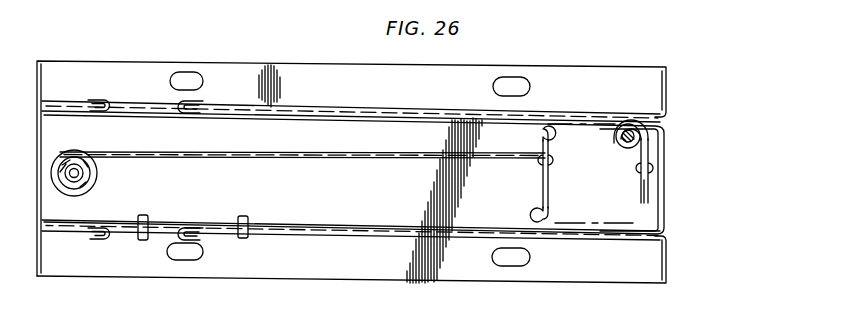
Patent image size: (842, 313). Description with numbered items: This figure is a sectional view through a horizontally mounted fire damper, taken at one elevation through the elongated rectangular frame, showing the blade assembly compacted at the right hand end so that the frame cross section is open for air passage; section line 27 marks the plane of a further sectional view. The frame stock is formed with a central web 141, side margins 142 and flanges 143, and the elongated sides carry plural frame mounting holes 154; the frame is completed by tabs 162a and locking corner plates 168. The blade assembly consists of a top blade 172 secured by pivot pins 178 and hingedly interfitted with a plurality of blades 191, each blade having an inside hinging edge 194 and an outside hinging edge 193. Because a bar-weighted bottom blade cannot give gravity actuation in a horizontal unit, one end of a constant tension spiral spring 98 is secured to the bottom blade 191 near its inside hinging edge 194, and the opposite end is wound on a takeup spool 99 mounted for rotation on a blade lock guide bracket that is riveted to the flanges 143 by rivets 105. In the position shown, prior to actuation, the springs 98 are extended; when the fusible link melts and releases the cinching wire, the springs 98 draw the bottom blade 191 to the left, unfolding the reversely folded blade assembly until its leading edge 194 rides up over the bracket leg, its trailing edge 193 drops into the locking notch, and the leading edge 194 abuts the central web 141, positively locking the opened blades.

The section line 27 is at (77, 67).
The side margins 142 is at (668, 90).
The flanges 143 is at (365, 112).
The frame mounting holes 154 is at (531, 86).
The central web 141 is at (665, 212).
The takeup spool 99 is at (95, 183).
The constant tension spiral spring 98 is at (365, 159).
The tabs 162a is at (105, 89).
The locking corner plates 168 is at (159, 106).
The rivets 105 is at (240, 217).
The blades 191 is at (549, 188).
The inside hinging edge 194 is at (530, 135).
The outside hinging edge 193 is at (530, 214).
The pivot pins 178 is at (617, 139).
The top blade 172 is at (641, 189).